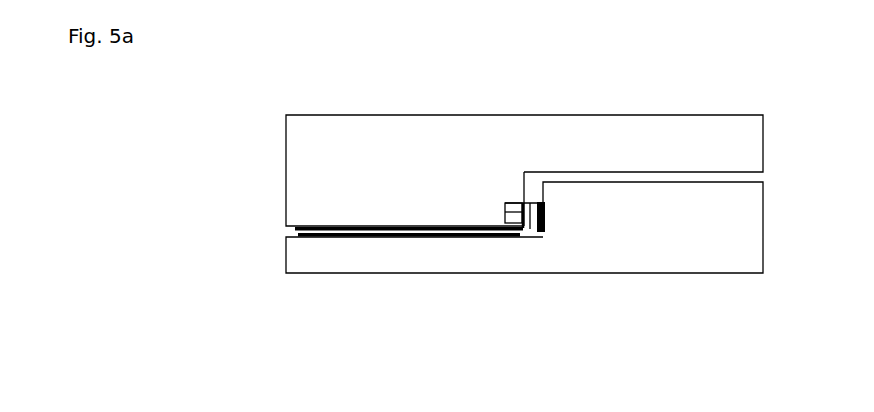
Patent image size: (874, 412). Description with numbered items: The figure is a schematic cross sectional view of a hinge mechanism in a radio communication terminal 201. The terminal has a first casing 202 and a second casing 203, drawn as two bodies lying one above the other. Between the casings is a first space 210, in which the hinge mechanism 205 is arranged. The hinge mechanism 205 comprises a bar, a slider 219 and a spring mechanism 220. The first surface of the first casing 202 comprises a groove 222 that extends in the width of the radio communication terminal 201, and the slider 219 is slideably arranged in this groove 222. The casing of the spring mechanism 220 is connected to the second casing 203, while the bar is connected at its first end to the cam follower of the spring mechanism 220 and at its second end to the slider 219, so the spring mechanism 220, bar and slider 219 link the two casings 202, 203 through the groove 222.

The radio communication terminal 201 is at (578, 181).
The first casing 202 is at (642, 122).
The second casing 203 is at (742, 265).
The hinge mechanism 205 is at (527, 240).
The first space 210 is at (538, 176).
The slider 219 is at (510, 222).
The spring mechanism 220 is at (547, 243).
The groove 222 is at (512, 195).